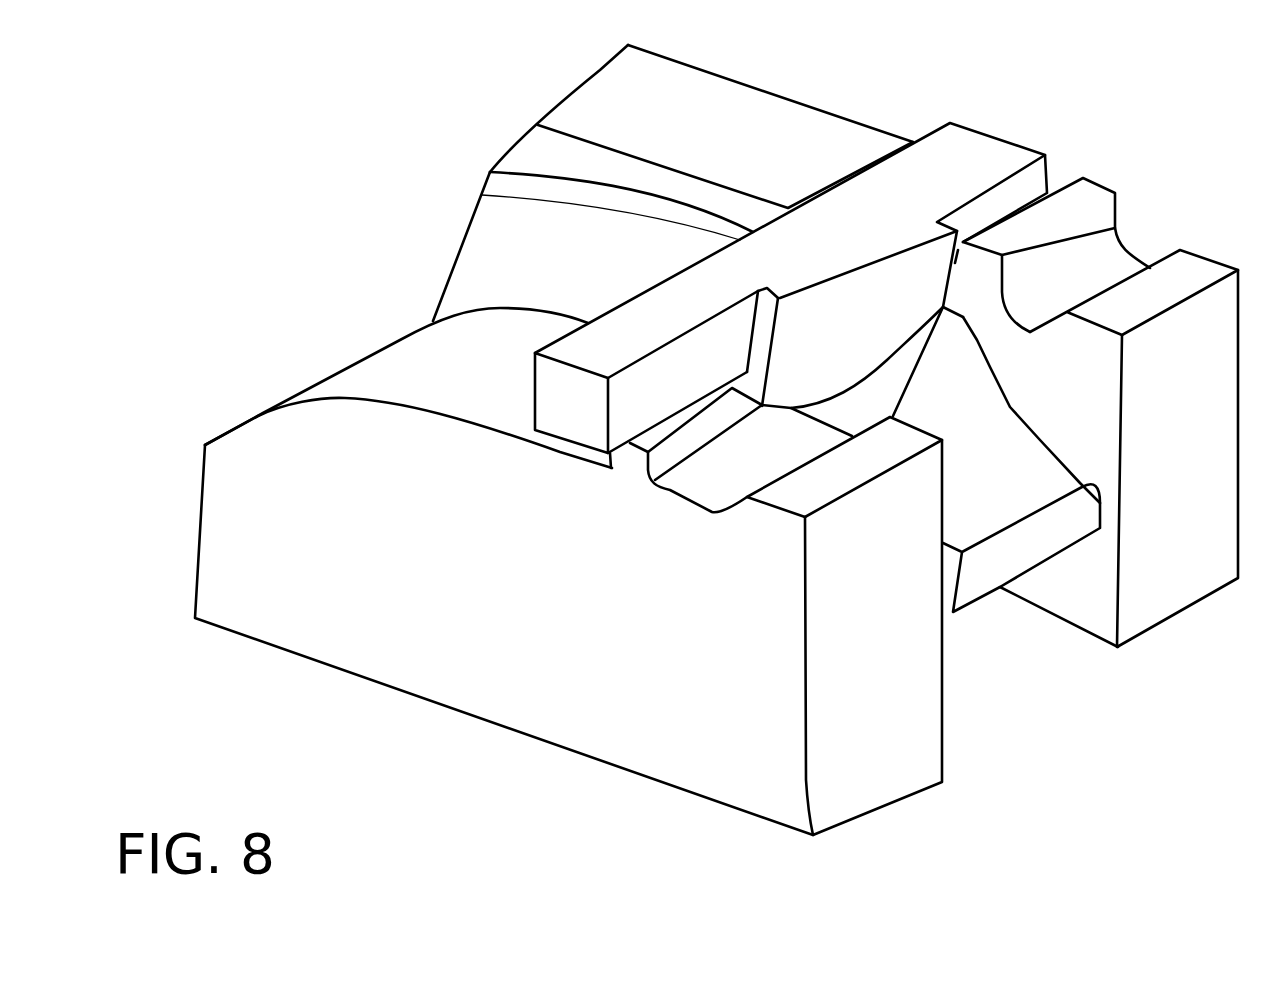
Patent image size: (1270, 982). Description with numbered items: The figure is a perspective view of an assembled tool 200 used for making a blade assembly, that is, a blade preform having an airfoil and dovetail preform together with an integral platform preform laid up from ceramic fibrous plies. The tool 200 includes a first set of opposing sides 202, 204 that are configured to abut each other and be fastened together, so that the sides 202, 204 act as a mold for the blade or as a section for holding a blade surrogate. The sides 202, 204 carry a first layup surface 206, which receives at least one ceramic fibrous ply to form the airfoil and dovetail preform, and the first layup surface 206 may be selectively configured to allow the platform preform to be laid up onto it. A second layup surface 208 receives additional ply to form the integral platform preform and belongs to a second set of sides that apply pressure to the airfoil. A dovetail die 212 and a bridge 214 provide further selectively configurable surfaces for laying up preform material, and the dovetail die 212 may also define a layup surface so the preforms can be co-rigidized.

The tool 200 is at (316, 128).
The opposing side 202 is at (528, 633).
The opposing side 204 is at (711, 127).
The first layup surface 206 is at (608, 270).
The second layup surface 208 is at (945, 297).
The dovetail die 212 is at (975, 578).
The bridge 214 is at (976, 177).